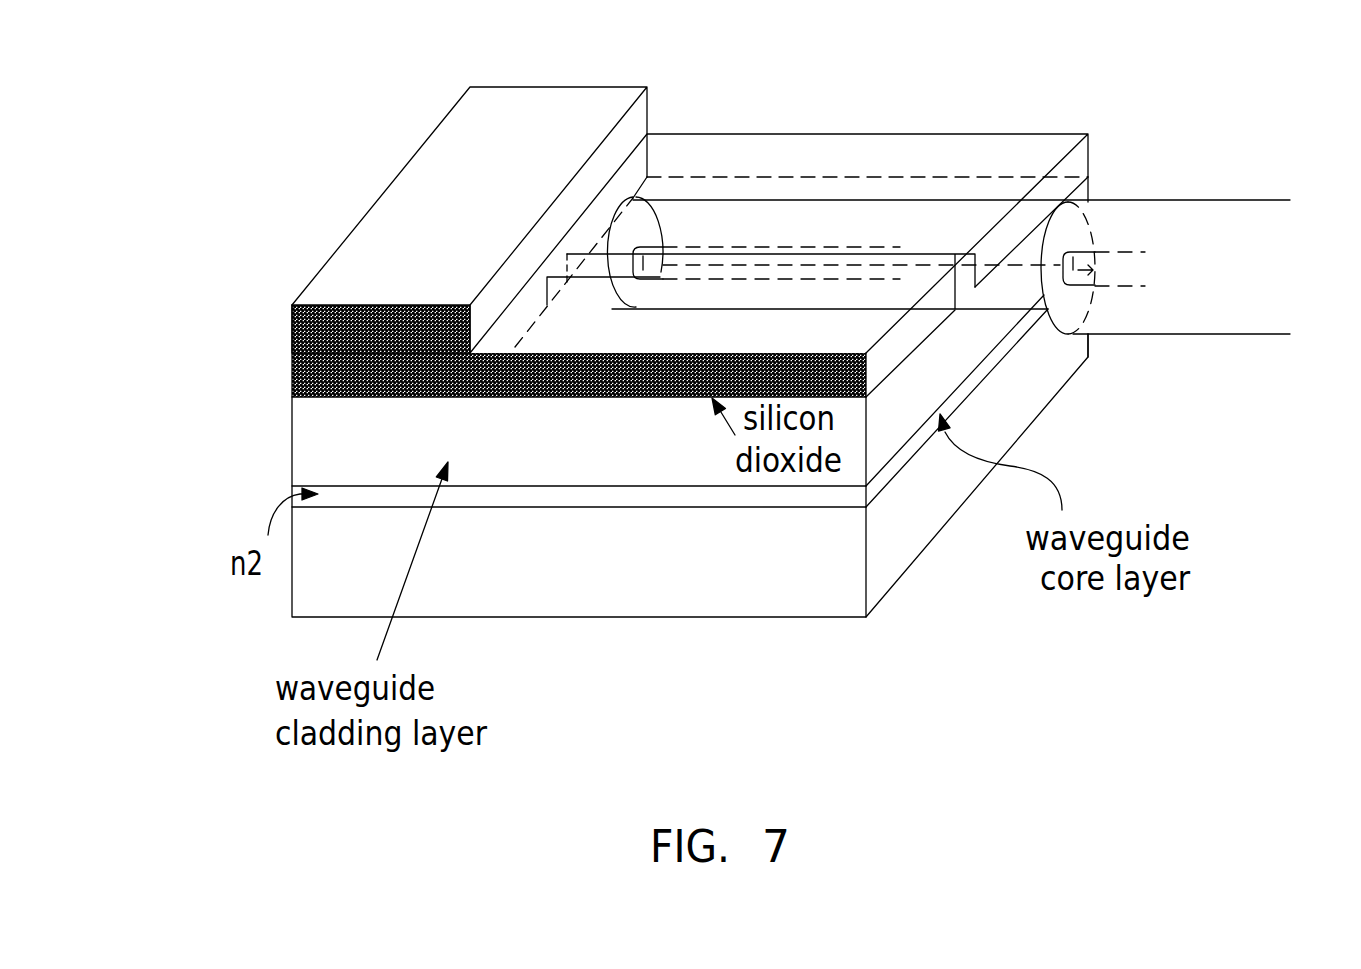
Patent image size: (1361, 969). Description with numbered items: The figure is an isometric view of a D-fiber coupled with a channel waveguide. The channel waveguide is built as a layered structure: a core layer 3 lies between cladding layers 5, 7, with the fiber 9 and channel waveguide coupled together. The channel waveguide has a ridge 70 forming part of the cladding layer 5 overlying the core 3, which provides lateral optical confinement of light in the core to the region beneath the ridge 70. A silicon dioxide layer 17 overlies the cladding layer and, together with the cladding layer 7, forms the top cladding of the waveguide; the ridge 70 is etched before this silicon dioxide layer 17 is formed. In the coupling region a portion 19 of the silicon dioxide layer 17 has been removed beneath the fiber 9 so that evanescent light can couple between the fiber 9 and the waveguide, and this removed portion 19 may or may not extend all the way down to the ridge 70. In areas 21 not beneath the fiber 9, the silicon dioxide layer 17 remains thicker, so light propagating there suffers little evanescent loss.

The core layer 3 is at (889, 487).
The cladding layer 5 is at (378, 458).
The cladding layer 7 is at (378, 578).
The fiber 9 is at (1162, 203).
The silicon dioxide layer 17 is at (328, 344).
The removed portion of the silicon dioxide layer 19 is at (947, 134).
The areas of the waveguide not below a D-fiber segment 21 is at (556, 165).
The ridge 70 is at (574, 257).